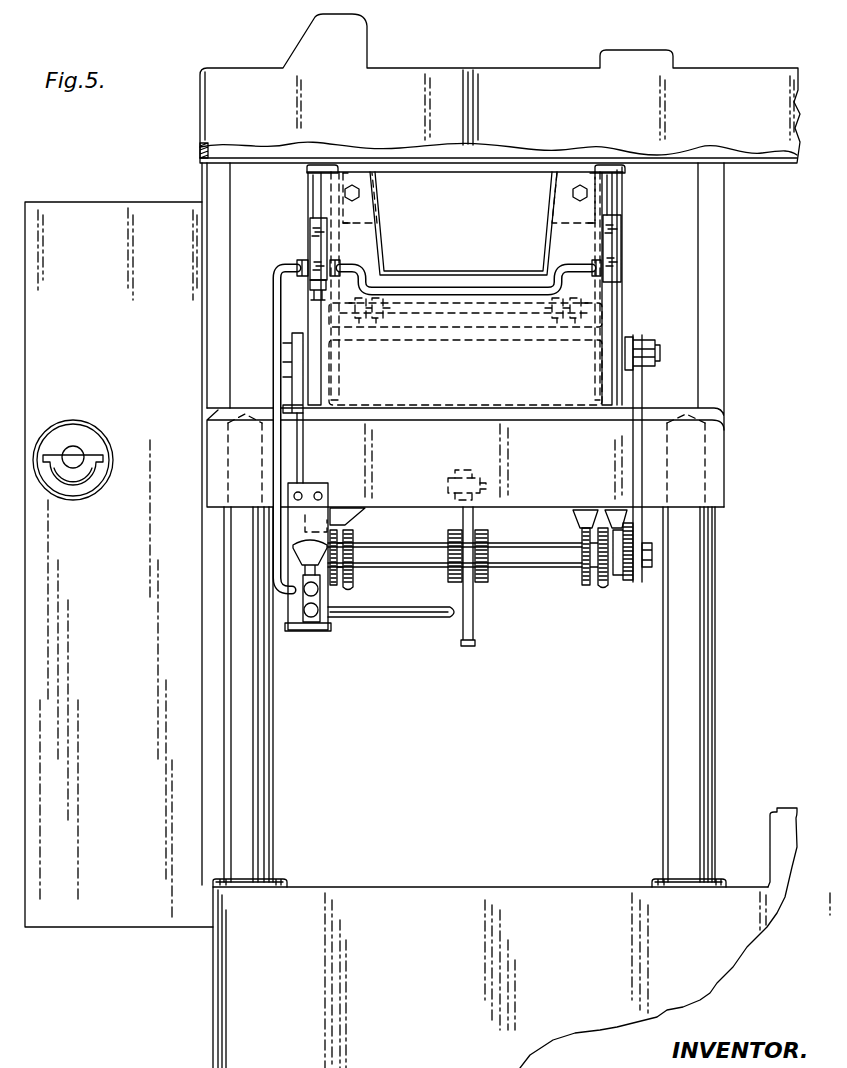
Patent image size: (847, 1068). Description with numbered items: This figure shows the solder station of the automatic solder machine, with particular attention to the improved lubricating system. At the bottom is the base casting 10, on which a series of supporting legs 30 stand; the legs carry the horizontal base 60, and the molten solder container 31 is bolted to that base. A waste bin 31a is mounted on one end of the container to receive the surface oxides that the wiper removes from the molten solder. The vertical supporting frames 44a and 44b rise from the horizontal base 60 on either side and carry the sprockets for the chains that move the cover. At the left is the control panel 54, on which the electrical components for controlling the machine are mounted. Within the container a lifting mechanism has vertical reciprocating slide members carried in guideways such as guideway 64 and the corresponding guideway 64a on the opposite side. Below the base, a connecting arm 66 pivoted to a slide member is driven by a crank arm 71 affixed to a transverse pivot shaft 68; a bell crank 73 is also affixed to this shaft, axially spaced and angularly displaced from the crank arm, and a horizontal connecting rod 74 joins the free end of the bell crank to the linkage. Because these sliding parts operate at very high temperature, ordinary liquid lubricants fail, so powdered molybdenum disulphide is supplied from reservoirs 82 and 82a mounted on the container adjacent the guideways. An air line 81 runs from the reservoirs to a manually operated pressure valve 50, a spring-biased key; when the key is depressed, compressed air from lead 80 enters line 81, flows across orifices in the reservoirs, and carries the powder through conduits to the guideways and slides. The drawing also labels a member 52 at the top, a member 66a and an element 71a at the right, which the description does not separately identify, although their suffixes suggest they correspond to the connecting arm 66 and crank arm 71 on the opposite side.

The base casting 10 is at (340, 896).
The supporting legs 30 is at (228, 746).
The molten solder container 31 is at (608, 306).
The waste bin 31a is at (509, 223).
The vertical supporting frame 44a is at (216, 268).
The vertical supporting frame 44b is at (715, 306).
The manually operated pressure valve 50 is at (296, 631).
The head beam 52 is at (428, 90).
The control panel 54 is at (65, 212).
The horizontal base 60 is at (723, 461).
The guideway 64 is at (308, 201).
The guideway 64a is at (618, 286).
The connecting arm 66 is at (296, 383).
The rod 66a is at (645, 391).
The transverse pivot shaft 68 is at (552, 568).
The crank arm 71 is at (318, 520).
The pulley 71a is at (628, 586).
The bell crank 73 is at (478, 647).
The horizontal connecting rod 74 is at (452, 478).
The compressed air lead 80 is at (407, 618).
The air line 81 is at (273, 286).
The reservoir 82 is at (314, 237).
The reservoir 82a is at (618, 238).